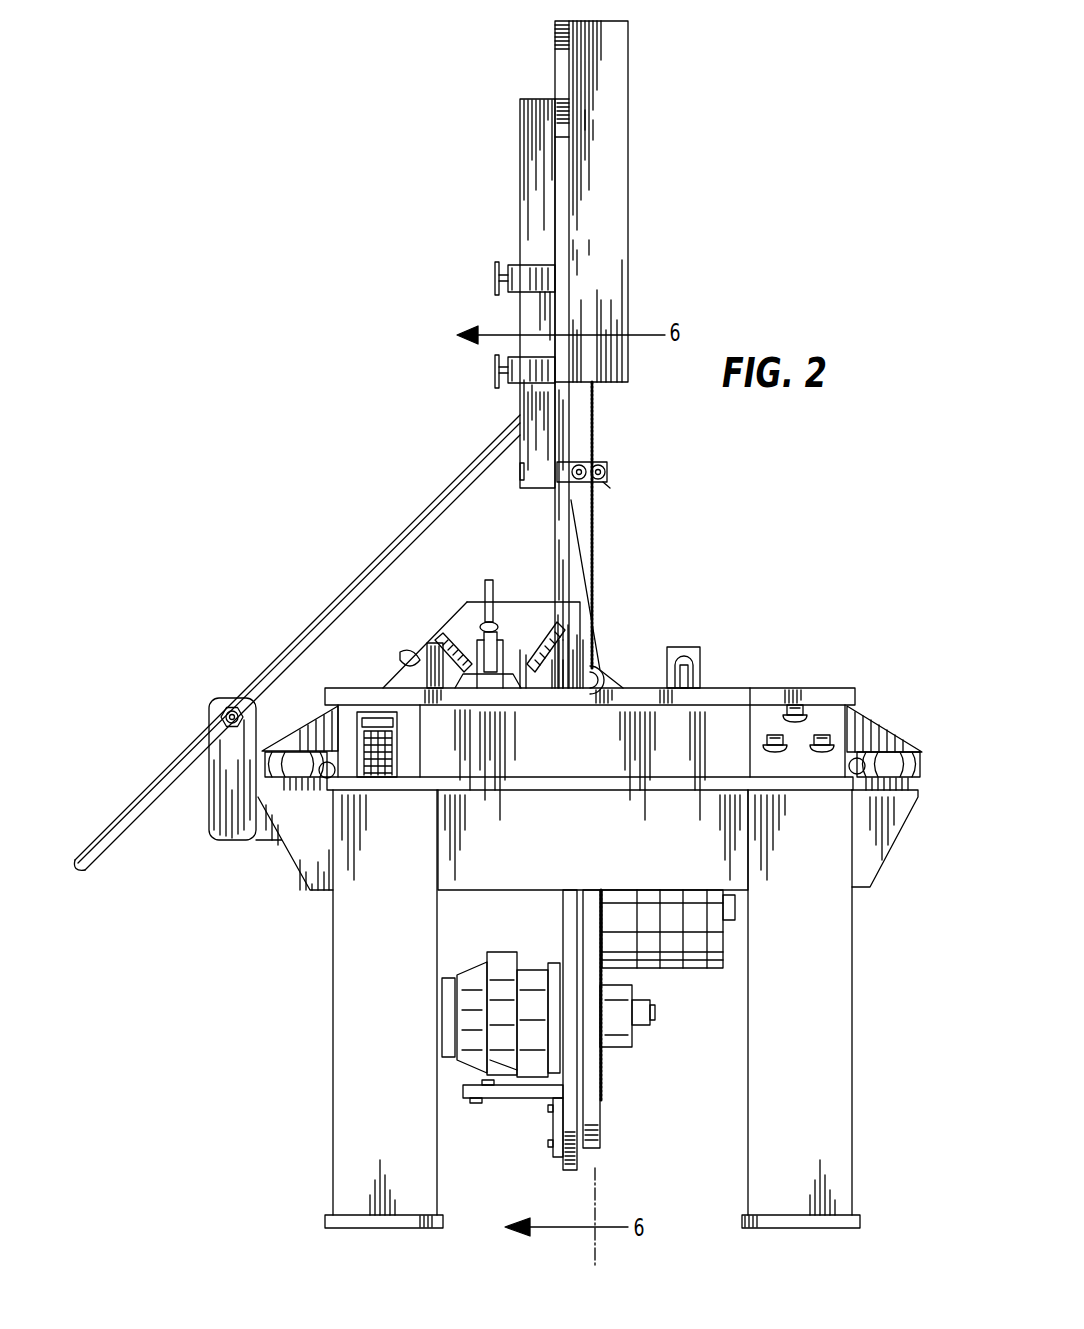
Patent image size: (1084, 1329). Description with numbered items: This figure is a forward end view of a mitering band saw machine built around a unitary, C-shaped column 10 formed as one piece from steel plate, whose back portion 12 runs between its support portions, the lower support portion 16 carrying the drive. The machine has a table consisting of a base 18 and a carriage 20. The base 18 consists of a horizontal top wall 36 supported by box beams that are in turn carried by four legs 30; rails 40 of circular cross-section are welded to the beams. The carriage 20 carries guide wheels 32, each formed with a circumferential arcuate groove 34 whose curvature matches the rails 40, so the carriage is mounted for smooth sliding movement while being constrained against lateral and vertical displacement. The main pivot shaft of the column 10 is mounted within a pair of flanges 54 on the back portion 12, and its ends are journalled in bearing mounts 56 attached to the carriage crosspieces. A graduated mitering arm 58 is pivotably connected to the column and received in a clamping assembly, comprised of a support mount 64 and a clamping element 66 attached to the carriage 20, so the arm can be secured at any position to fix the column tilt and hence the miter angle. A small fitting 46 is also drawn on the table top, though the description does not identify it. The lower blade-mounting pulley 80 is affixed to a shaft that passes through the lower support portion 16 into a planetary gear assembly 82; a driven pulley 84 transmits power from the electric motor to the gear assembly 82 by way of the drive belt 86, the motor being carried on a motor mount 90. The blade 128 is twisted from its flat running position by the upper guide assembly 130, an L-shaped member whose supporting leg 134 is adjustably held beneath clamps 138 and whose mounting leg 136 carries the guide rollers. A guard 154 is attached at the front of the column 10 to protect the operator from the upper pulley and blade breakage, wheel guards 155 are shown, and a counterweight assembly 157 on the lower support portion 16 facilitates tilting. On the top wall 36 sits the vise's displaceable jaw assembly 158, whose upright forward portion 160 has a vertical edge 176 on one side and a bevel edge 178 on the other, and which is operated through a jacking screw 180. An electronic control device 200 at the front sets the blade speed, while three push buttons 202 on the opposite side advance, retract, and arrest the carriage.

The column 10 is at (548, 524).
The back portion 12 is at (567, 560).
The lower support portion 16 is at (566, 1118).
The base 18 is at (584, 1009).
The carriage 20 is at (559, 845).
The legs 30 is at (340, 1080).
The guide wheels 32 is at (873, 752).
The circumferential arcuate groove 34 is at (298, 763).
The top wall 36 is at (758, 688).
The rails 40 is at (326, 790).
The stop 46 is at (684, 655).
The flanges 54 is at (603, 645).
The bearing mounts 56 is at (600, 682).
The mitering arm 58 is at (360, 584).
The support mount 64 is at (216, 822).
The clamping element 66 is at (232, 705).
The lower blade-mounting pulley 80 is at (615, 1032).
The planetary gear assembly 82 is at (500, 960).
The driven pulley 84 is at (447, 1027).
The drive belt 86 is at (447, 998).
The motor mount 90 is at (503, 1090).
The blade 128 is at (598, 405).
The upper guide assembly 130 is at (605, 481).
The supporting leg 134 is at (534, 187).
The mounting leg 136 is at (580, 470).
The clamps 138 is at (520, 372).
The guard 154 is at (608, 212).
The wheel guards 155 is at (318, 725).
The counterweight assembly 157 is at (670, 945).
The displaceable jaw assembly 158 is at (545, 632).
The upright forward portion 160 is at (500, 604).
The vertical edge 176 is at (586, 692).
The bevel edge 178 is at (418, 665).
The jacking screw 180 is at (462, 628).
The electronic control device 200 is at (380, 760).
The push buttons 202 is at (763, 745).